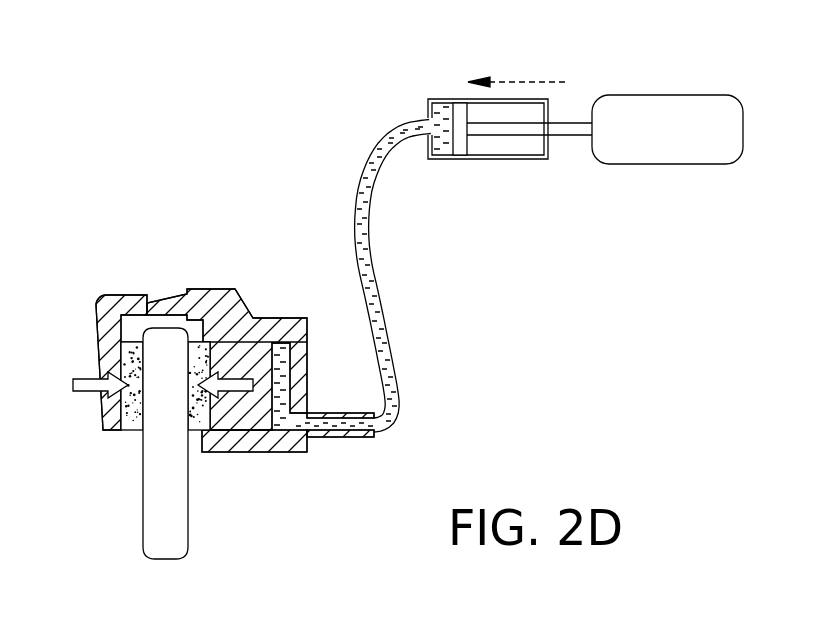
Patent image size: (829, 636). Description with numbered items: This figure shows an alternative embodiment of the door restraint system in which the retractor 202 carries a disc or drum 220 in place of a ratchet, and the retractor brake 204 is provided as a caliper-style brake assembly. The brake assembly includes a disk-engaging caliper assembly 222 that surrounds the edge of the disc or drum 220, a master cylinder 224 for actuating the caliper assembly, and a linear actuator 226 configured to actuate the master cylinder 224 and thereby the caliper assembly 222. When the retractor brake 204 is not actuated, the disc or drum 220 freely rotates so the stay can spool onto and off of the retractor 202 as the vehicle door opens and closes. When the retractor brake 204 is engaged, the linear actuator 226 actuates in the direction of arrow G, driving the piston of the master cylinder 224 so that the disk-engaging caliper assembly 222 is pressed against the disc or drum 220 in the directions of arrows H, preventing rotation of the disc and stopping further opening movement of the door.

The retractor 202 is at (194, 377).
The retractor brake 204 is at (443, 97).
The disc or drum 220 is at (182, 512).
The disk-engaging caliper assembly 222 is at (170, 280).
The master cylinder 224 is at (502, 160).
The linear actuator 226 is at (662, 107).
The caliper actuation arrows H is at (103, 381).
The linear actuator actuation arrow G is at (516, 71).